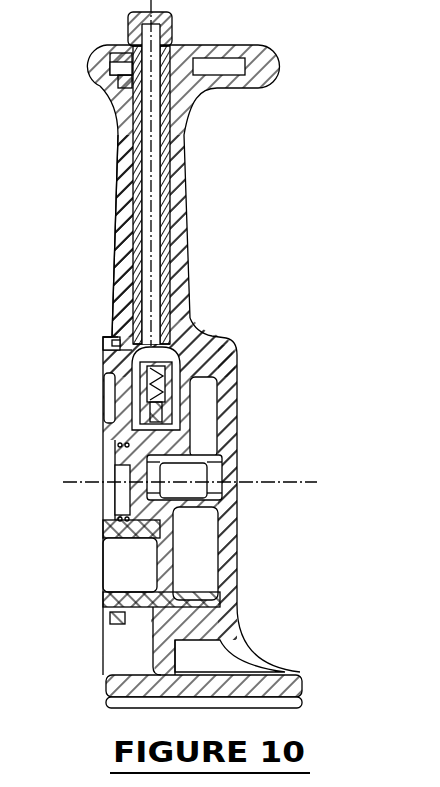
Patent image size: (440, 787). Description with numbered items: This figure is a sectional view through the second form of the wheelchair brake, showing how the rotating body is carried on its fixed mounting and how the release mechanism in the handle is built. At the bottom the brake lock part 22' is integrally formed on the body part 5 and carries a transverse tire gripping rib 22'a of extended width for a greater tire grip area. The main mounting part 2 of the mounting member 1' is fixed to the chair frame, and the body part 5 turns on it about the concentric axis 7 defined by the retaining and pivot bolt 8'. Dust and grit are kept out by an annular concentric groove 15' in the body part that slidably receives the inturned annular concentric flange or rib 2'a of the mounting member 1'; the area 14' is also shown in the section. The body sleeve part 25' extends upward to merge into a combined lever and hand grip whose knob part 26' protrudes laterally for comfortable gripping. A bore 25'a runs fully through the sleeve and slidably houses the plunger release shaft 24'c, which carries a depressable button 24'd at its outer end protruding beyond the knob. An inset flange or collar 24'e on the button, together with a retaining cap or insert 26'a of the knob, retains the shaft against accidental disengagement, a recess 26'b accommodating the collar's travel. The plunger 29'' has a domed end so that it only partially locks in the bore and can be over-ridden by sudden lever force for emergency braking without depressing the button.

The depressable button 24'd is at (236, 173).
The inset flange or collar 24'e is at (67, 64).
The knob part 26' is at (211, 191).
The recess 26'b is at (67, 93).
The retaining cap or insert 26'a is at (249, 95).
The body sleeve part 25' is at (184, 211).
The bore 25'a is at (71, 236).
The plunger release shaft 24'c is at (202, 195).
The annular concentric groove 15' is at (83, 313).
The inturned annular concentric flange or rib 2'a is at (80, 347).
The plunger 29'' is at (216, 362).
The main body part 5 is at (235, 355).
The main mounting part 2 is at (260, 492).
The slot 14' is at (87, 447).
The retaining and pivot bolt 8' is at (225, 472).
The concentric axis 7 is at (287, 482).
The mounting member 1' is at (124, 597).
The brake lock part 22' is at (168, 686).
The transverse tire gripping rib 22'a is at (162, 707).